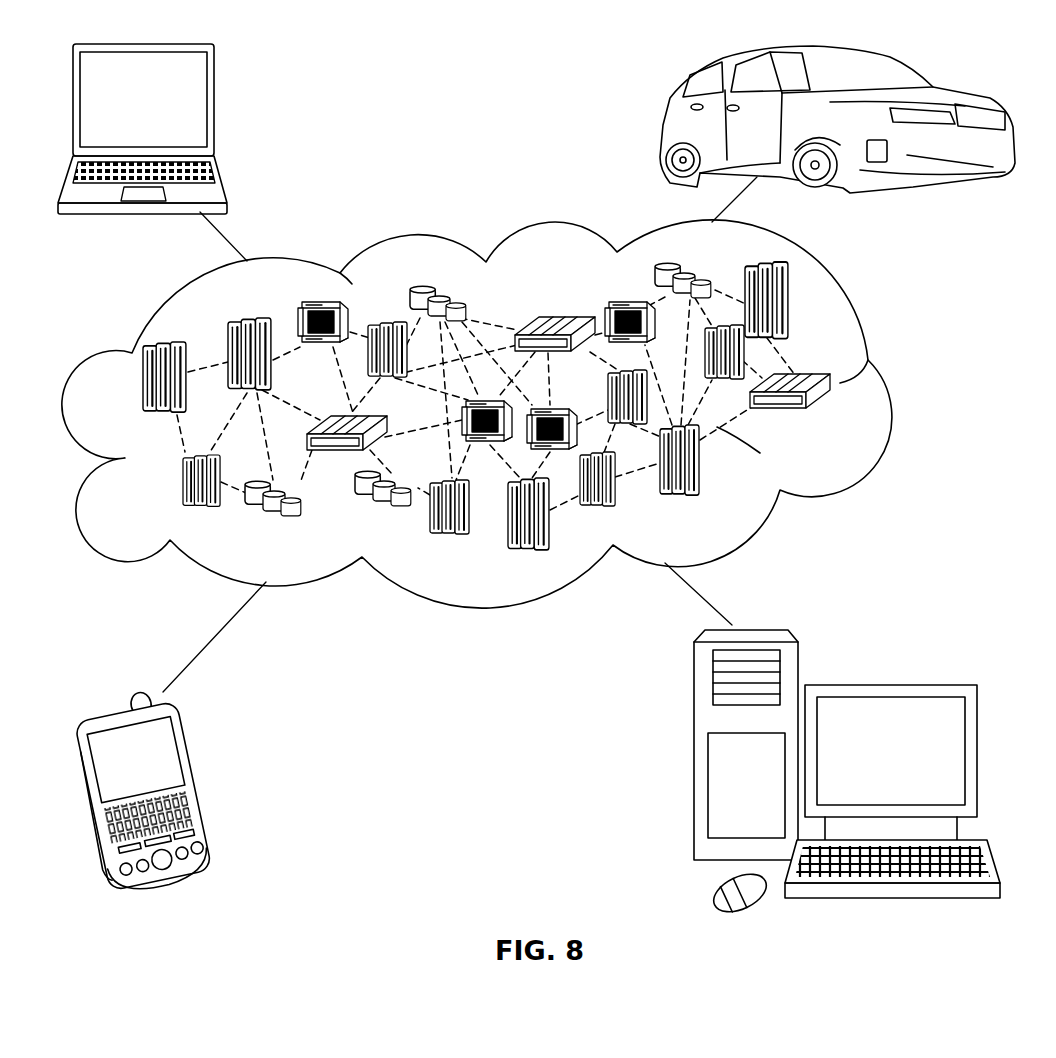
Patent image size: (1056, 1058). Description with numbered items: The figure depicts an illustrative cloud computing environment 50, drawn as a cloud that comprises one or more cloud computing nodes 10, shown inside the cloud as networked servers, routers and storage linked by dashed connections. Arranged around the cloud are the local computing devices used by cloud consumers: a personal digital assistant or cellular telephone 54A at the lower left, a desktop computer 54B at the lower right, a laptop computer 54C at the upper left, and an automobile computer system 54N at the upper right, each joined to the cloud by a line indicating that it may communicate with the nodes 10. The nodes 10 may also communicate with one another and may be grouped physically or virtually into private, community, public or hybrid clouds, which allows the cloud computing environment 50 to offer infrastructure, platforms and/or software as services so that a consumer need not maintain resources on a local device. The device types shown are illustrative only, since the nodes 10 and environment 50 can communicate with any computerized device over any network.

The cloud computing node 10 is at (846, 426).
The cloud computing environment 50 is at (892, 388).
The personal digital assistant (PDA) or cellular telephone 54A is at (203, 777).
The desktop computer 54B is at (888, 683).
The laptop computer 54C is at (214, 108).
The automobile computer system 54N is at (662, 126).